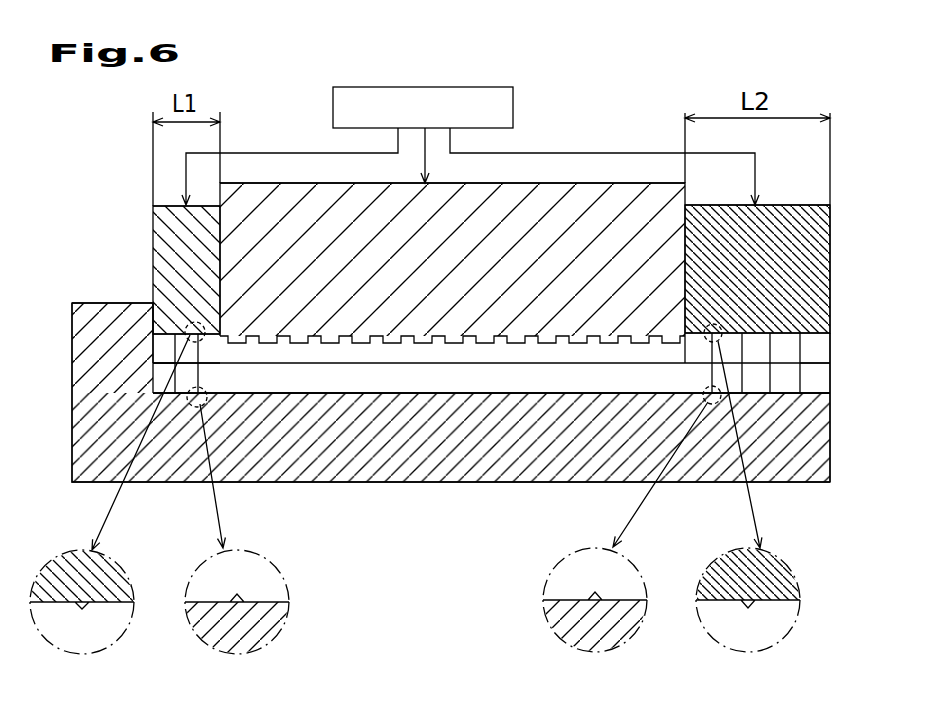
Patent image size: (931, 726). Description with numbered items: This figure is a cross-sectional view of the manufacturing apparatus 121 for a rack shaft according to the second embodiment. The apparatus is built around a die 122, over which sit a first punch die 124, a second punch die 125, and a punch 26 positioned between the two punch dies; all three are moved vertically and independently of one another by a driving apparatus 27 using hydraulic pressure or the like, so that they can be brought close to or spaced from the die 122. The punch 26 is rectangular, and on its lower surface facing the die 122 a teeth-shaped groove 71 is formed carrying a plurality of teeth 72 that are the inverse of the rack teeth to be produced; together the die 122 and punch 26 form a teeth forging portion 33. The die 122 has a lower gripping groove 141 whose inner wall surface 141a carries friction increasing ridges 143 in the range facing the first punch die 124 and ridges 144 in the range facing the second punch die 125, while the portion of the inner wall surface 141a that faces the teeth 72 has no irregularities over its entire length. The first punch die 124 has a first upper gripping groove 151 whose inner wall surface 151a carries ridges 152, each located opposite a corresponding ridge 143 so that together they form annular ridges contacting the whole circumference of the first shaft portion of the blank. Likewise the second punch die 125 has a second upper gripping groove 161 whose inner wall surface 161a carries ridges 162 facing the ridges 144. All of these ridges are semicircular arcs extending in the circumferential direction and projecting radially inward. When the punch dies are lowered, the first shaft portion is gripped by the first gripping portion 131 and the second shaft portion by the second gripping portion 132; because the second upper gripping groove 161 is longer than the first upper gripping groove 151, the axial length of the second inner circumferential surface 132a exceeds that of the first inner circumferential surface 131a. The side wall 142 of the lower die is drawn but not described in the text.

The manufacturing apparatus 121 is at (55, 133).
The die 122 is at (72, 400).
The first punch die 124 is at (168, 204).
The second punch die 125 is at (790, 205).
The first gripping portion 131 is at (128, 292).
The first inner circumferential surface 131a is at (165, 347).
The second gripping portion 132 is at (833, 268).
The second inner circumferential surface 132a is at (808, 348).
The lower gripping groove 141 is at (450, 396).
The inner wall surface of the lower gripping groove 141a is at (491, 425).
The side wall portion 142 is at (83, 377).
The ridges 143 is at (243, 599).
The ridges 144 is at (592, 595).
The first upper gripping groove 151 is at (190, 328).
The inner wall surface of the first upper gripping groove 151a is at (186, 294).
The ridges 152 is at (80, 607).
The second upper gripping groove 161 is at (748, 332).
The inner wall surface of the second upper gripping groove 161a is at (757, 301).
The ridges 162 is at (757, 603).
The punch 26 is at (570, 183).
The driving apparatus 27 is at (498, 87).
The teeth forging portion 33 is at (600, 170).
The teeth-shaped groove 71 is at (433, 340).
The teeth 72 is at (365, 340).